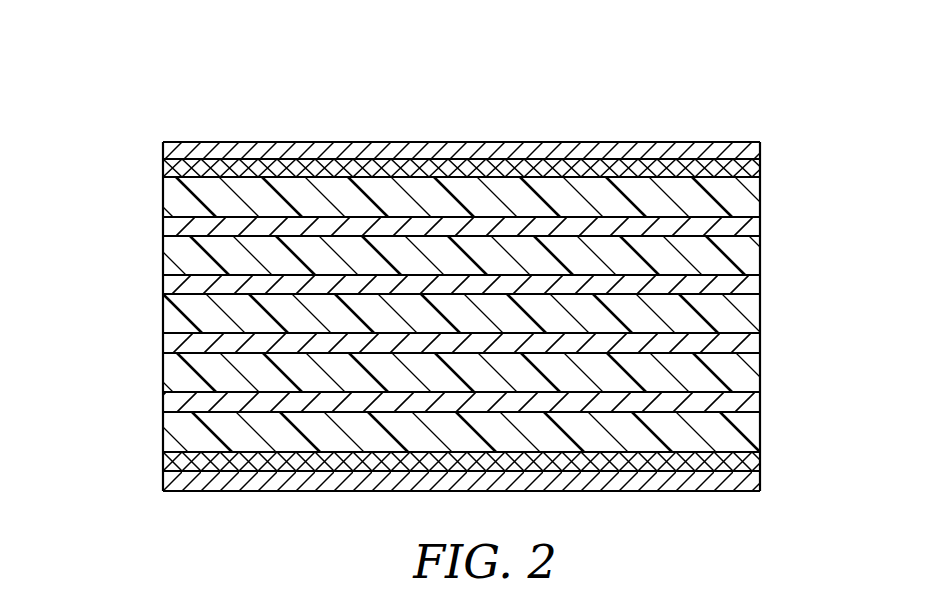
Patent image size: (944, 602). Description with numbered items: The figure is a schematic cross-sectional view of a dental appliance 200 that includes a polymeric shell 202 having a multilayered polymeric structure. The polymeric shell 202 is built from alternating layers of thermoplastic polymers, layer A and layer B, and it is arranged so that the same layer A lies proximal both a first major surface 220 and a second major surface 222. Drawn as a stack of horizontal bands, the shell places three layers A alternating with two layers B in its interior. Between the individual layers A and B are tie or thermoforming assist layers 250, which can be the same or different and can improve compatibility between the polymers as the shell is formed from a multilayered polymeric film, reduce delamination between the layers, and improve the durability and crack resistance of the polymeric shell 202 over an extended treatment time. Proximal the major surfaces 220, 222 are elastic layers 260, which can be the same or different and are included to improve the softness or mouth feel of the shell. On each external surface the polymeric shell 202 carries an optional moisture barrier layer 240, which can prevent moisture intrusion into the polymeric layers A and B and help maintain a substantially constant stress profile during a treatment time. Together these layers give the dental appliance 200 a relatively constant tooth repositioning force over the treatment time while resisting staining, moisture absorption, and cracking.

The dental appliance 200 is at (112, 33).
The polymeric shell 202 is at (170, 119).
The first major surface 220 is at (162, 158).
The second major surface 222 is at (162, 477).
The moisture barrier layer 240 is at (692, 152).
The tie or thermoforming assist layer 250 is at (748, 225).
The elastic layer 260 is at (748, 167).
The layer A is at (174, 196).
The layer B is at (174, 257).